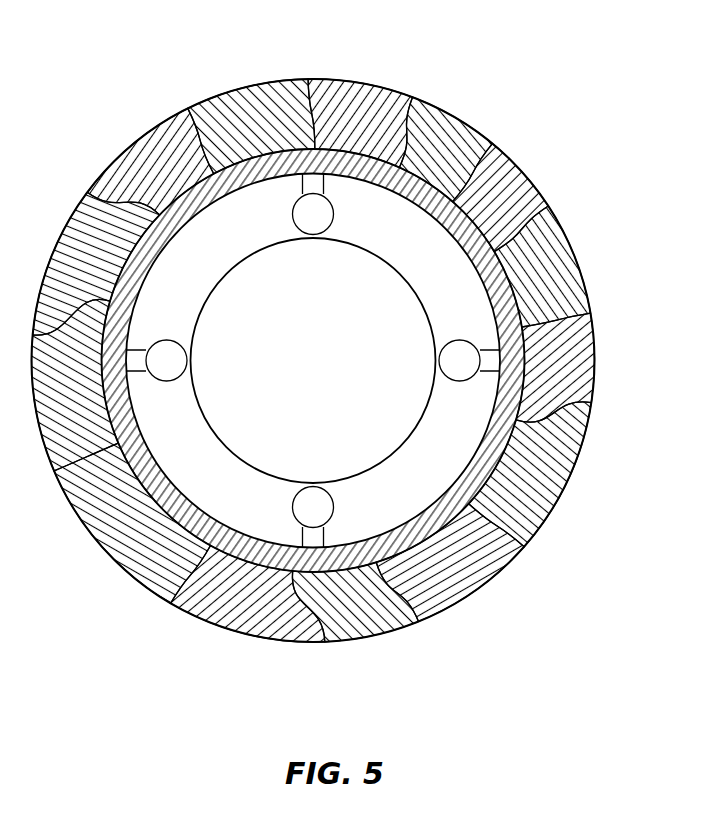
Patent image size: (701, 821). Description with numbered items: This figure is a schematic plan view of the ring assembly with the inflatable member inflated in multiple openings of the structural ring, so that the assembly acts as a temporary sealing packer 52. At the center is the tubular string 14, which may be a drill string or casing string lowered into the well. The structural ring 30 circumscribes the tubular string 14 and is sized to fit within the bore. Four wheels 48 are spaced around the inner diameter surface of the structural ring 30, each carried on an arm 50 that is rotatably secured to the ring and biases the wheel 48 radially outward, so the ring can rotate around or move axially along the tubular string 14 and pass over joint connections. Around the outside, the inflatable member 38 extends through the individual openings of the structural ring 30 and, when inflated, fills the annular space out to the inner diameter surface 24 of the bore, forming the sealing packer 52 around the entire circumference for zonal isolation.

The tubular string 14 is at (250, 467).
The inner diameter surface 24 is at (364, 90).
The structural ring 30 is at (433, 212).
The inflatable member 38 is at (552, 493).
The wheel 48 is at (465, 340).
The arm 50 is at (140, 347).
The sealing packer 52 is at (330, 338).